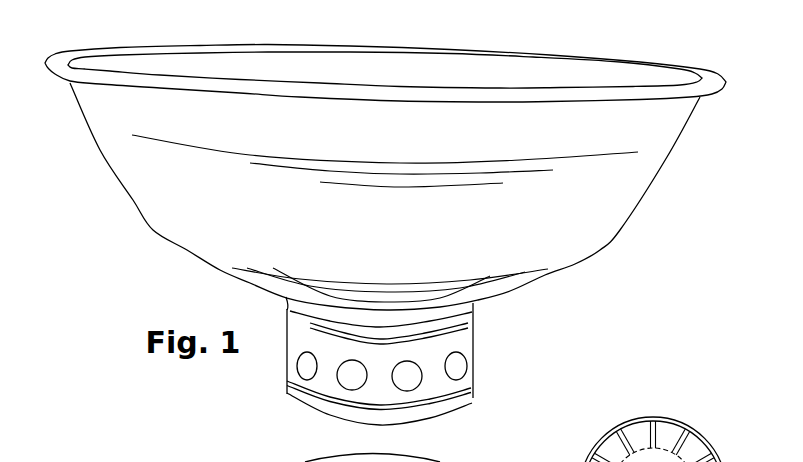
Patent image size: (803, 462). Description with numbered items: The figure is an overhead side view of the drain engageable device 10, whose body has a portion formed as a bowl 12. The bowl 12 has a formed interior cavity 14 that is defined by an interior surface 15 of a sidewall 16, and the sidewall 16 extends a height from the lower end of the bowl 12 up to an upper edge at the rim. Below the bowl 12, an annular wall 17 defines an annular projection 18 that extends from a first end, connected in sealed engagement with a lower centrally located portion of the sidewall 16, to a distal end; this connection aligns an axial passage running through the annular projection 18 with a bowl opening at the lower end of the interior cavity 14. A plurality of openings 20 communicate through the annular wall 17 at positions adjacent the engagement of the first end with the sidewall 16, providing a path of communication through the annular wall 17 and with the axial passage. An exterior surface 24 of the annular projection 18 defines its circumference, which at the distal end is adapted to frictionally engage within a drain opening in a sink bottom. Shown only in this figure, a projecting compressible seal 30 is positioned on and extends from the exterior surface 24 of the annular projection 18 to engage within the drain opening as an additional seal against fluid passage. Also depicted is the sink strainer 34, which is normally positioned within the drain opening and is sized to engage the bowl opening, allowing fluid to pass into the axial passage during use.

The drain engageable device 10 is at (62, 174).
The bowl 12 is at (75, 100).
The interior cavity 14 is at (497, 78).
The interior surface 15 is at (300, 82).
The sidewall 16 is at (173, 213).
The annular wall 17 is at (300, 332).
The annular projection 18 is at (472, 330).
The openings 20 is at (458, 366).
The exterior surface 24 is at (292, 348).
The projecting compressible seal 30 is at (297, 391).
The sink strainer 34 is at (637, 420).